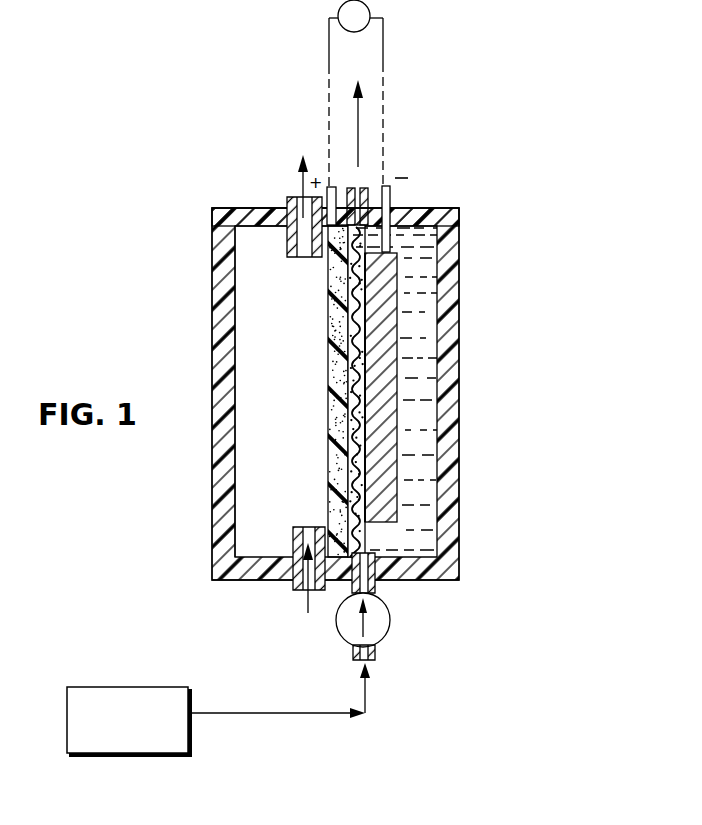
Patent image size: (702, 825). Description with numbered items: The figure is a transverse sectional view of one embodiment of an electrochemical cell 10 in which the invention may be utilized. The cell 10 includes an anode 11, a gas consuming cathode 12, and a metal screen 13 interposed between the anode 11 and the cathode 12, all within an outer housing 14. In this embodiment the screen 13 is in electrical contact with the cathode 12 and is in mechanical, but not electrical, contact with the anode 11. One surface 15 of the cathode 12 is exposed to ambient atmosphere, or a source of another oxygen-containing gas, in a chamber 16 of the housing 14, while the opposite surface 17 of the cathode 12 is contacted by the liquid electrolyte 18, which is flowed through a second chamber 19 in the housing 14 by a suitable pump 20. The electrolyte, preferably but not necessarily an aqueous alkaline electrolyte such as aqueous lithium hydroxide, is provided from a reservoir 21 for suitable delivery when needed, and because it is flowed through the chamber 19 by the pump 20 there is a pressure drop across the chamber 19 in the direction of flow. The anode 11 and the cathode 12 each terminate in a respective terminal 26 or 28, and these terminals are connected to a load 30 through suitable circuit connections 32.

The electrochemical cell 10 is at (207, 184).
The anode 11 is at (397, 353).
The gas consuming cathode 12 is at (330, 309).
The metal screen 13 is at (363, 310).
The outer housing 14 is at (453, 465).
The surface of the cathode 15 is at (330, 347).
The chamber 16 is at (235, 403).
The opposite surface of the cathode 17 is at (357, 408).
The liquid electrolyte 18 is at (423, 258).
The second chamber 19 is at (422, 225).
The pump 20 is at (392, 624).
The reservoir 21 is at (118, 687).
The terminal 26 is at (384, 186).
The terminal 28 is at (333, 187).
The load 30 is at (372, 10).
The circuit connections 32 is at (329, 50).